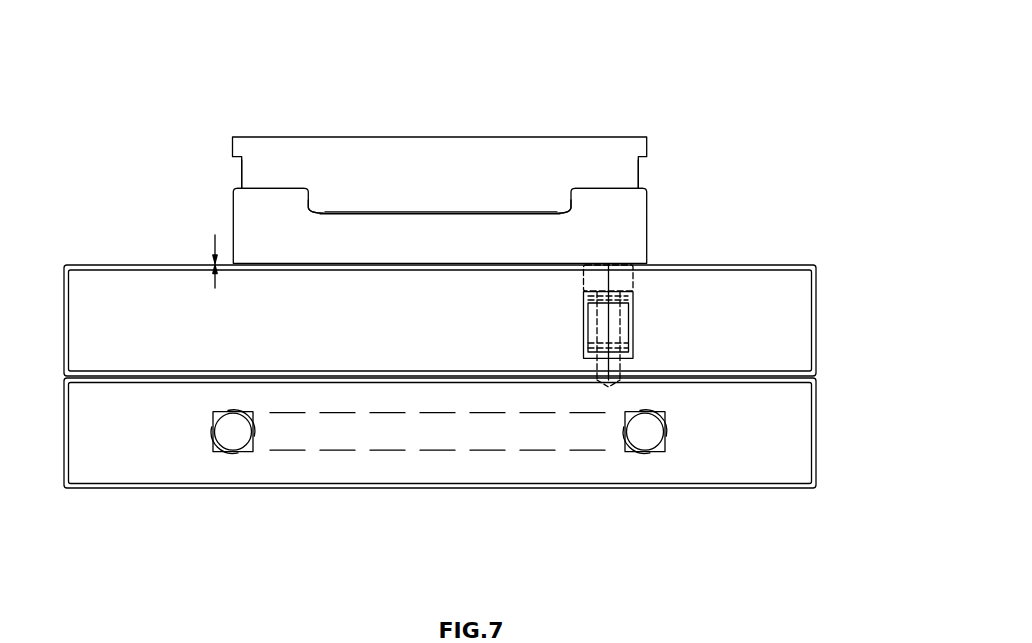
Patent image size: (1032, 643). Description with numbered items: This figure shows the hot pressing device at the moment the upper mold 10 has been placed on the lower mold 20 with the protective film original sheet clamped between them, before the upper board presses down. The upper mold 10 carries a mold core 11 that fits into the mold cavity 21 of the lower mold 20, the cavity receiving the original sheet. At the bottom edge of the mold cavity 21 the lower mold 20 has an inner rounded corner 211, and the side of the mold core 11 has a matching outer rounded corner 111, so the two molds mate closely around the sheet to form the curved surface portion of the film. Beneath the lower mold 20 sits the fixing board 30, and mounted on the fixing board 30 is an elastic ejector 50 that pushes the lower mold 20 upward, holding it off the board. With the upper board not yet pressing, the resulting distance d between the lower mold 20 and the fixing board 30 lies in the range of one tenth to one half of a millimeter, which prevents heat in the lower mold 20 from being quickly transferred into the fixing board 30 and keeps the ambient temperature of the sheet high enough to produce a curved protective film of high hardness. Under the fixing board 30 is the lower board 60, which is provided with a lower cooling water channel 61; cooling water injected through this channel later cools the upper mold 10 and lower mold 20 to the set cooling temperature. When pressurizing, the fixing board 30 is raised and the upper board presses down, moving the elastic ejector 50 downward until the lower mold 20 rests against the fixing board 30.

The upper mold 10 is at (442, 157).
The mold core 11 is at (492, 202).
The outer rounded corner 111 is at (320, 213).
The lower mold 20 is at (610, 218).
The mold cavity 21 is at (378, 213).
The inner rounded corner 211 is at (318, 212).
The fixing board 30 is at (727, 338).
The elastic ejector 50 is at (592, 327).
The lower board 60 is at (735, 432).
The lower cooling water channel 61 is at (333, 438).
The distance d is at (210, 265).